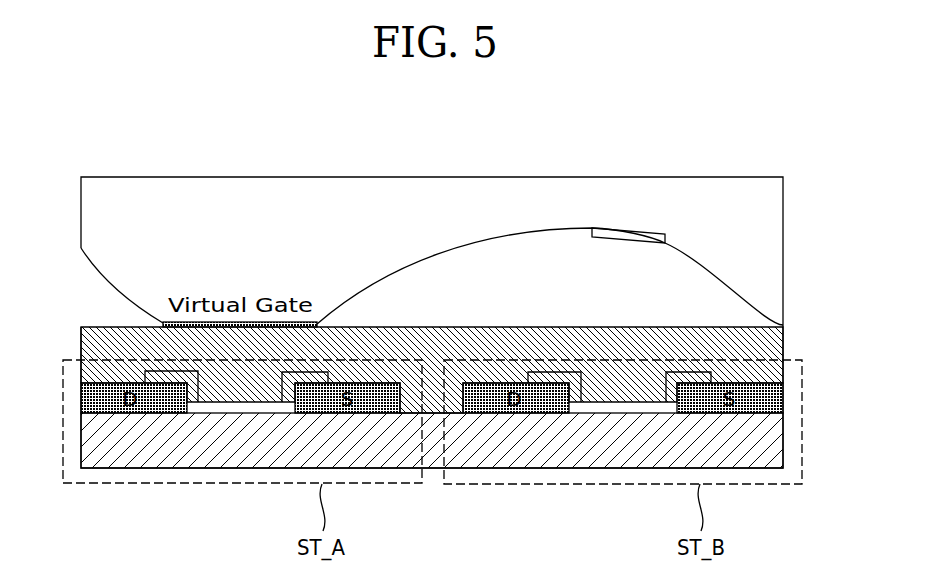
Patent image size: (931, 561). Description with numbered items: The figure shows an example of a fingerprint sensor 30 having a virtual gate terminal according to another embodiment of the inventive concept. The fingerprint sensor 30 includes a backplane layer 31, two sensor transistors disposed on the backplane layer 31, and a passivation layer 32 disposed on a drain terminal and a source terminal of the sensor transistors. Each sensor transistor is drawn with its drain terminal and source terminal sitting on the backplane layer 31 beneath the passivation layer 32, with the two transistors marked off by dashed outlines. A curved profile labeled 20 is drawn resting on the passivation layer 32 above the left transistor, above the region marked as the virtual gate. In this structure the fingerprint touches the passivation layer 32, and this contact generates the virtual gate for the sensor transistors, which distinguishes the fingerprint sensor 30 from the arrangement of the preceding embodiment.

The encapsulation layer 20 is at (107, 218).
The fingerprint sensor 30 is at (748, 139).
The backplane layer 31 is at (107, 448).
The passivation layer 32 is at (107, 353).